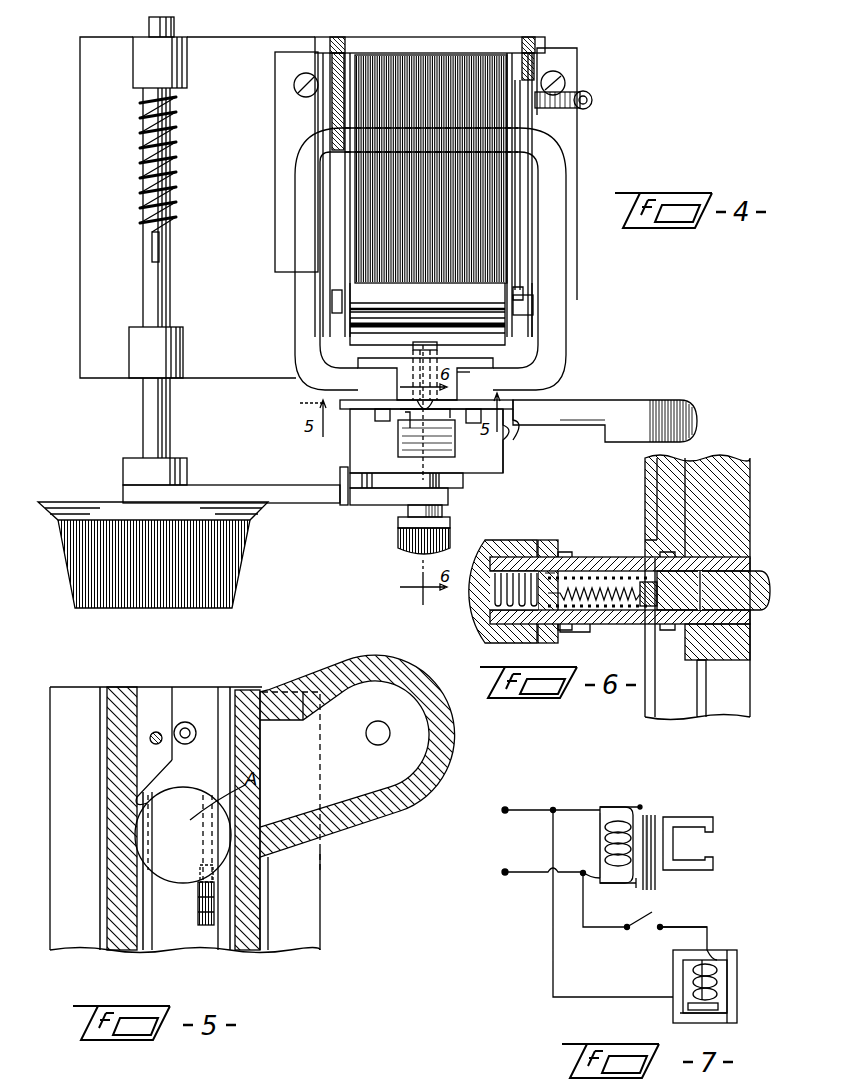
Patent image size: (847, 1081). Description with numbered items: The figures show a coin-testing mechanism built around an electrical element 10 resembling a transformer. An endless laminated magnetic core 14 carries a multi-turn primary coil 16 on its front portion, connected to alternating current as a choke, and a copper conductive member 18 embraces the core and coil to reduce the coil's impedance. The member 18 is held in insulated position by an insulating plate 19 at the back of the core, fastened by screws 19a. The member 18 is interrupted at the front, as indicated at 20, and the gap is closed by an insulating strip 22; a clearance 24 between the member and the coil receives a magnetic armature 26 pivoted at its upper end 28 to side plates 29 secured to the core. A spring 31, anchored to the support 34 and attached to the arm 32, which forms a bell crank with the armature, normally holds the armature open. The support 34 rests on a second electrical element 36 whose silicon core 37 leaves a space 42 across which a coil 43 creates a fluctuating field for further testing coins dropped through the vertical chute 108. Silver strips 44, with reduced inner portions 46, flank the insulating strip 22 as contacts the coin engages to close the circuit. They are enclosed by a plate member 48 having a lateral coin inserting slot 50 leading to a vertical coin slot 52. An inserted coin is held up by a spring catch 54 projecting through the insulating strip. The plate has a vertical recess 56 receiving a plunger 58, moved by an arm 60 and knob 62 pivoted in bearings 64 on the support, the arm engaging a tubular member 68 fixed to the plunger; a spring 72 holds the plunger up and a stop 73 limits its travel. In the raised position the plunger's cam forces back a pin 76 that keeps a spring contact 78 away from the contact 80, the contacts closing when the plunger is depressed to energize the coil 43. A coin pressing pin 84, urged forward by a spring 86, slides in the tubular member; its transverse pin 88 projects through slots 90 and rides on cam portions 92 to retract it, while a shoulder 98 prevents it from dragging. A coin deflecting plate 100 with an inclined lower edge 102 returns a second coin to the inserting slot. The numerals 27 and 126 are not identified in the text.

In FIG. 7, the electrical element 10 is at (656, 804).
In FIG. 4, the endless magnetic core 14 is at (460, 60).
In FIG. 7, the endless magnetic core 14 is at (655, 880).
In FIG. 7, the primary coil 16 is at (612, 824).
In FIG. 4, the conductive member 18 is at (555, 264).
In FIG. 7, the conductive member 18 is at (690, 822).
In FIG. 4, the insulating plate 19 is at (400, 40).
In FIG. 4, the screws 19a is at (334, 90).
In FIG. 4, the interruption 20 is at (460, 388).
In FIG. 4, the insulating strip 22 is at (397, 372).
In FIG. 5, the insulating strip 22 is at (190, 692).
In FIG. 4, the clearance 24 is at (532, 333).
In FIG. 7, the magnetic armature 26 is at (598, 845).
In FIG. 4, the coil end plate 27 is at (510, 218).
In FIG. 4, the upper end 28 is at (362, 322).
In FIG. 4, the side plates 29 is at (343, 283).
In FIG. 4, the spring 31 is at (584, 92).
In FIG. 4, the arm 32 is at (522, 150).
In FIG. 4, the support 34 is at (80, 270).
In FIG. 7, the second electrical element 36 is at (727, 950).
In FIG. 7, the silicon core 37 is at (740, 978).
In FIG. 7, the space 42 is at (720, 1005).
In FIG. 7, the coil 43 is at (715, 972).
In FIG. 4, the silver strips 44 is at (520, 392).
In FIG. 5, the silver strips 44 is at (225, 950).
In FIG. 4, the reduced inner portions 46 is at (390, 421).
In FIG. 4, the plate member 48 is at (493, 463).
In FIG. 4, the coin inserting slot 50 is at (660, 406).
In FIG. 5, the coin inserting slot 50 is at (378, 668).
In FIG. 5, the vertical coin slot 52 is at (198, 752).
In FIG. 4, the spring catch 54 is at (410, 436).
In FIG. 5, the spring catch 54 is at (198, 902).
In FIG. 4, the vertical recess 56 is at (400, 490).
In FIG. 4, the plunger 58 is at (450, 455).
In FIG. 6, the plunger 58 is at (745, 496).
In FIG. 4, the arm 60 is at (308, 503).
In FIG. 4, the knob 62 is at (228, 592).
In FIG. 4, the bearings 64 is at (180, 357).
In FIG. 4, the tubular member 68 is at (450, 536).
In FIG. 6, the tubular member 68 is at (612, 557).
In FIG. 4, the spring 72 is at (180, 172).
In FIG. 4, the stop 73 is at (342, 505).
In FIG. 4, the pin 76 is at (440, 352).
In FIG. 5, the pin 76 is at (187, 723).
In FIG. 7, the spring contact 78 is at (645, 918).
In FIG. 7, the contact 80 is at (664, 926).
In FIG. 6, the coin pressing pin 84 is at (758, 585).
In FIG. 6, the spring 86 is at (485, 636).
In FIG. 4, the transverse pin 88 is at (412, 500).
In FIG. 6, the transverse pin 88 is at (648, 582).
In FIG. 6, the slots 90 is at (604, 625).
In FIG. 6, the cam portions 92 is at (650, 630).
In FIG. 6, the shoulder 98 is at (740, 560).
In FIG. 4, the coin deflecting plate 100 is at (378, 414).
In FIG. 5, the coin deflecting plate 100 is at (140, 692).
In FIG. 5, the inclined lower edge 102 is at (160, 792).
In FIG. 7, the vertical chute 108 is at (700, 1008).
In FIG. 6, the pin 126 is at (702, 690).